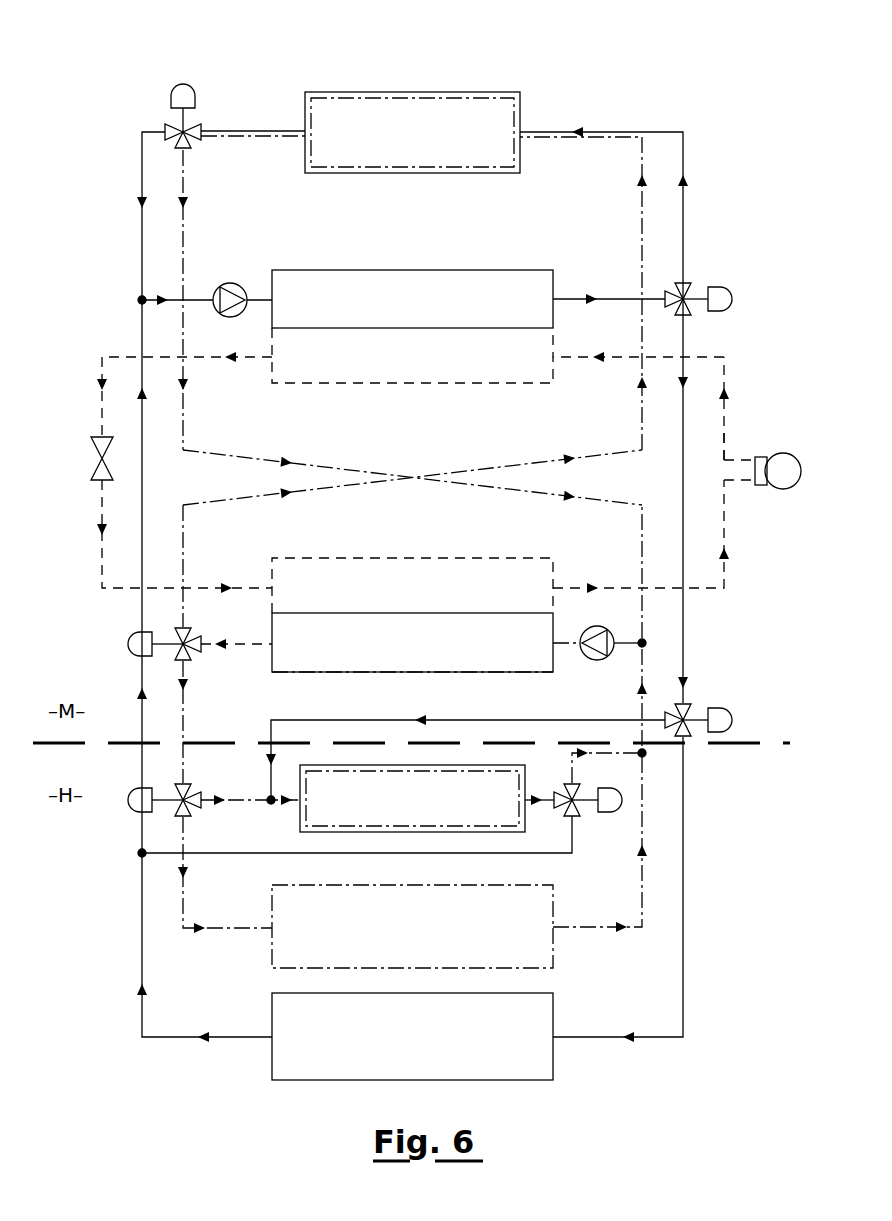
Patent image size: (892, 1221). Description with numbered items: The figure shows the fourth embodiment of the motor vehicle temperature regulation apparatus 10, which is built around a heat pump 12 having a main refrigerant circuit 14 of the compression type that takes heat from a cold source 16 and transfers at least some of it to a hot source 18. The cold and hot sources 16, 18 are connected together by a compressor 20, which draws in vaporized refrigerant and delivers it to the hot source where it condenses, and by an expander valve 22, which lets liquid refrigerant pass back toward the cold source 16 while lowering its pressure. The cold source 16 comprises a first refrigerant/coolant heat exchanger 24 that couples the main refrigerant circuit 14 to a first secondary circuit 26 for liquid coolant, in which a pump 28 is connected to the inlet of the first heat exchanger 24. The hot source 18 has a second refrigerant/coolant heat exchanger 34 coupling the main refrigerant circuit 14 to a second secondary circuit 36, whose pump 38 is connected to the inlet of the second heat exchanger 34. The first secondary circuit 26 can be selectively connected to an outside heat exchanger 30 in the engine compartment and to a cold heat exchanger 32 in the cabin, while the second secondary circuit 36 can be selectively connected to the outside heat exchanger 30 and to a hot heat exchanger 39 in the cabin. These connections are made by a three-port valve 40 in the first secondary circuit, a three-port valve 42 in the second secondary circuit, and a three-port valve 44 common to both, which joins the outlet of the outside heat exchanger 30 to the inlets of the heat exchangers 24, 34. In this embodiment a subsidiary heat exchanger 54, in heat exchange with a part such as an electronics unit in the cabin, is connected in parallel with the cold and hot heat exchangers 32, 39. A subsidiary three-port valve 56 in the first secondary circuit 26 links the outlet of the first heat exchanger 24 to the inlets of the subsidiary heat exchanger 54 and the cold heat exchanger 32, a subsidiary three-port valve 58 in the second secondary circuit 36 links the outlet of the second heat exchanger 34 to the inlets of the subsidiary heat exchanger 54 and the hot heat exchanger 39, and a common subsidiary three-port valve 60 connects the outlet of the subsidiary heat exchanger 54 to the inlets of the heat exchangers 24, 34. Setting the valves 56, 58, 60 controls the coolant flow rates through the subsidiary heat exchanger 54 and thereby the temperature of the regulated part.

The temperature regulation apparatus 10 is at (710, 117).
The heat pump 12 is at (752, 432).
The main refrigerant circuit 14 is at (735, 578).
The cold source 16 is at (417, 553).
The hot source 18 is at (420, 392).
The compressor 20 is at (797, 488).
The expander valve 22 is at (96, 456).
The first refrigerant/coolant heat exchanger 24 is at (412, 642).
The first secondary circuit 26 is at (257, 647).
The pump 28 is at (590, 661).
The outside heat exchanger 30 is at (412, 132).
The cold heat exchanger 32 is at (412, 926).
The second refrigerant/coolant heat exchanger 34 is at (412, 299).
The second secondary circuit 36 is at (567, 298).
The pump 38 is at (237, 285).
The hot heat exchanger 39 is at (412, 1036).
The three-port valve 40 is at (196, 634).
The three-port valve 42 is at (688, 283).
The three-port valve 44 is at (196, 128).
The subsidiary heat exchanger 54 is at (412, 798).
The subsidiary three-port valve 56 is at (178, 813).
The subsidiary three-port valve 58 is at (688, 707).
The common subsidiary three-port valve 60 is at (583, 810).